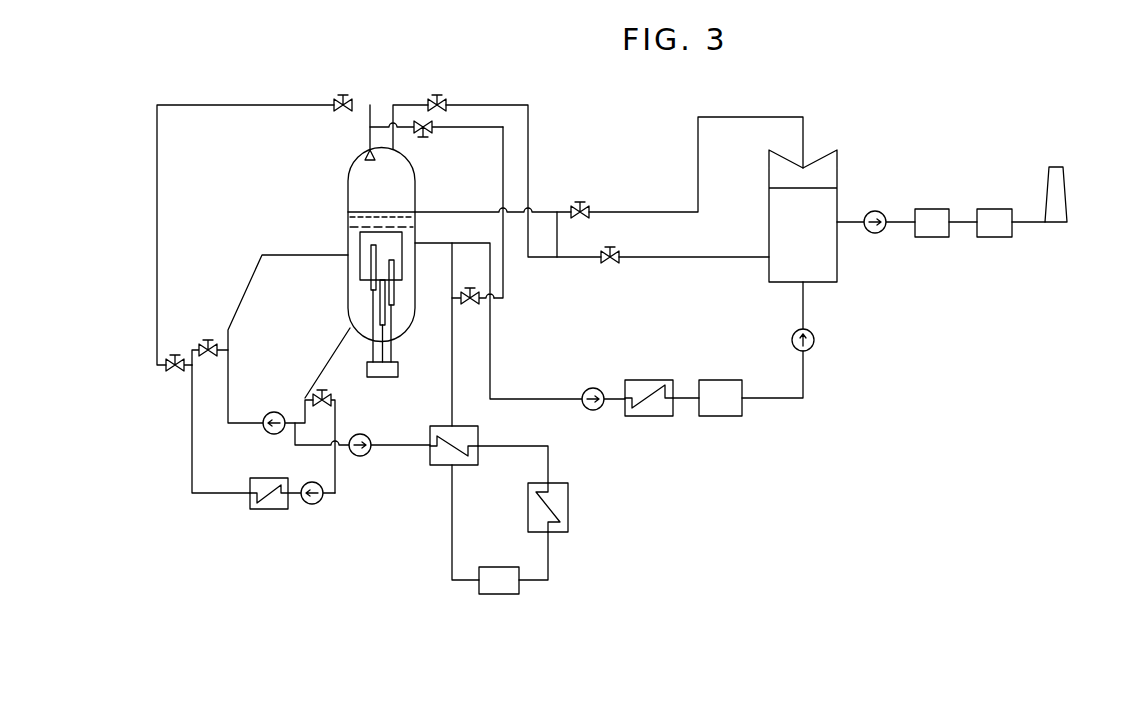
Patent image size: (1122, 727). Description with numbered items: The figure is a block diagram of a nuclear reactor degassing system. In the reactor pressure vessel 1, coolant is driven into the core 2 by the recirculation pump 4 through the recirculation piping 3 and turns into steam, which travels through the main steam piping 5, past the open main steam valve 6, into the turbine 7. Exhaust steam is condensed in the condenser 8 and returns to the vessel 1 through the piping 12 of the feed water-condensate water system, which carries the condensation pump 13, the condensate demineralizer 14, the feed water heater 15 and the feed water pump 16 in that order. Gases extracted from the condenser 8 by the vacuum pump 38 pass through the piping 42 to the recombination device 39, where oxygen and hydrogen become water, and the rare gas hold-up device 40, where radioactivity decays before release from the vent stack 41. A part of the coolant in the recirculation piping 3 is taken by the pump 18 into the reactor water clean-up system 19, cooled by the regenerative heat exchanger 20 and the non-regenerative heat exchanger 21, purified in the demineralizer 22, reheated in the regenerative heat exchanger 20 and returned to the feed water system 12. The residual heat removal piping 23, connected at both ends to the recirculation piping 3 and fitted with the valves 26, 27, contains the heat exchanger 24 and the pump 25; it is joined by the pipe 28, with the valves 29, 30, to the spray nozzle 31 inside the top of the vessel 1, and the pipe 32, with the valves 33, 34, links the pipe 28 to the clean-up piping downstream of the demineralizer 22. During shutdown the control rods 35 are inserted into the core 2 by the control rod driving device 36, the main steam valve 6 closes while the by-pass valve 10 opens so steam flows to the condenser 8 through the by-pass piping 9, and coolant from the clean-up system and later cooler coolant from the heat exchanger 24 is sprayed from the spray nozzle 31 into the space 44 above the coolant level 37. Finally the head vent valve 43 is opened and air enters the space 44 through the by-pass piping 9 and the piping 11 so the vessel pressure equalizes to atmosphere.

The reactor pressure vessel 1 is at (347, 186).
The core 2 is at (362, 229).
The recirculation piping 3 is at (251, 276).
The recirculation pump 4 is at (274, 411).
The main steam piping 5 is at (640, 212).
The main steam valve 6 is at (582, 203).
The turbine 7 is at (840, 175).
The condenser 8 is at (840, 272).
The by-pass piping 9 is at (558, 240).
The by-pass valve 10 is at (612, 265).
The piping 11 is at (500, 104).
The piping for feed water-condensate water system 12 is at (775, 398).
The condensation pump 13 is at (812, 346).
The condensate demineralizer 14 is at (710, 380).
The feed water heater 15 is at (636, 380).
The feed water pump 16 is at (590, 388).
The pump 18 is at (362, 457).
The reactor water clean-up system 19 is at (548, 459).
The regenerative heat exchanger 20 is at (435, 465).
The non-regenerative heat exchanger 21 is at (568, 508).
The demineralizer 22 is at (505, 595).
The residual heat removal piping 23 is at (192, 462).
The heat exchanger 24 is at (272, 510).
The pump 25 is at (312, 505).
The valve 26 is at (207, 340).
The valve 27 is at (332, 400).
The pipe 28 is at (157, 211).
The valve 29 is at (175, 373).
The valve 30 is at (340, 92).
The spray nozzle 31 is at (373, 162).
The pipe 32 is at (507, 153).
The valve 33 is at (470, 308).
The valve 34 is at (433, 138).
The control rods 35 is at (368, 272).
The control rod driving device 36 is at (399, 369).
The coolant level 37 is at (406, 213).
The vacuum pump 38 is at (880, 212).
The recombination device 39 is at (930, 237).
The rare gas hold-up device 40 is at (990, 209).
The vent stack 41 is at (1062, 167).
The piping 42 is at (1030, 222).
The head vent valve 43 is at (442, 94).
The space 44 is at (356, 166).